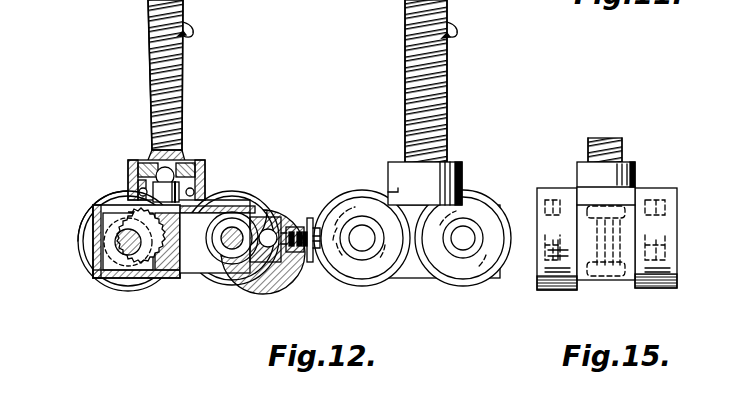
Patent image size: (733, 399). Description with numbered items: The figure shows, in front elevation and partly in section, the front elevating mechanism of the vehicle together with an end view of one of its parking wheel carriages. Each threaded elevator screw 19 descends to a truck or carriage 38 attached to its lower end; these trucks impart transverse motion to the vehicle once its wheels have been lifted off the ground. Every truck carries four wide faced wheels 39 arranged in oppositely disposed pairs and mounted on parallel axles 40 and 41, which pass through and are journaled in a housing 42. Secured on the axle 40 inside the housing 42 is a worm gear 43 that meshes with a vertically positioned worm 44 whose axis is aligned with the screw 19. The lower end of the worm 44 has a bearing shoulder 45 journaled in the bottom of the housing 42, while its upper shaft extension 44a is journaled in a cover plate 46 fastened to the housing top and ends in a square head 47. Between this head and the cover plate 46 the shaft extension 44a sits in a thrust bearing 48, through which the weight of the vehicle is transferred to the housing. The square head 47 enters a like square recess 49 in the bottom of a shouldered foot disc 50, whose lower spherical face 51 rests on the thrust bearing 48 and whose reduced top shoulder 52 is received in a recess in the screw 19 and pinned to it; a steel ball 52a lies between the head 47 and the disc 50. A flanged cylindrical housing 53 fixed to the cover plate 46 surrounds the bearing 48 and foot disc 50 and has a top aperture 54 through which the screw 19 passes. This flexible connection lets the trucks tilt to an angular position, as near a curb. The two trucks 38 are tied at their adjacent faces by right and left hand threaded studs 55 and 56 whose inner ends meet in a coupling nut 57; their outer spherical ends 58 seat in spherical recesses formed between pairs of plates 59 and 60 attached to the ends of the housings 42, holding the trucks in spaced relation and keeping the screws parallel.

In FIG. 12, the threaded elevator screw 19 is at (302, 81).
In FIG. 15, the threaded elevator screw 19 is at (622, 140).
In FIG. 12, the truck or carriage 38 is at (231, 274).
In FIG. 15, the truck or carriage 38 is at (602, 278).
In FIG. 12, the wide faced wheel 39 is at (100, 198).
In FIG. 15, the wide faced wheel 39 is at (553, 190).
In FIG. 12, the axle 40 is at (120, 242).
In FIG. 15, the axle 40 is at (540, 262).
In FIG. 12, the axle 41 is at (229, 250).
In FIG. 12, the housing 42 is at (140, 277).
In FIG. 15, the housing 42 is at (585, 242).
In FIG. 12, the worm gear 43 is at (100, 223).
In FIG. 15, the worm gear 43 is at (600, 215).
In FIG. 12, the worm 44 is at (178, 228).
In FIG. 12, the shaft extension 44a is at (207, 187).
In FIG. 12, the bearing shoulder 45 is at (178, 250).
In FIG. 12, the cover plate 46 is at (225, 205).
In FIG. 15, the cover plate 46 is at (587, 195).
In FIG. 12, the square head 47 is at (180, 163).
In FIG. 12, the thrust bearing 48 is at (128, 193).
In FIG. 12, the square recess 49 is at (132, 173).
In FIG. 12, the shouldered foot disc 50 is at (143, 163).
In FIG. 12, the spherical face 51 is at (128, 185).
In FIG. 12, the top shoulder 52 is at (181, 158).
In FIG. 12, the steel ball 52a is at (146, 163).
In FIG. 12, the flanged cylindrical housing 53 is at (258, 212).
In FIG. 15, the flanged cylindrical housing 53 is at (635, 164).
In FIG. 12, the top aperture 54 is at (188, 182).
In FIG. 12, the right hand threaded stud 55 is at (297, 232).
In FIG. 12, the left hand threaded stud 56 is at (314, 232).
In FIG. 12, the coupling nut 57 is at (296, 253).
In FIG. 12, the spherical end 58 is at (311, 218).
In FIG. 12, the plate 59 is at (268, 248).
In FIG. 12, the plate 60 is at (252, 265).